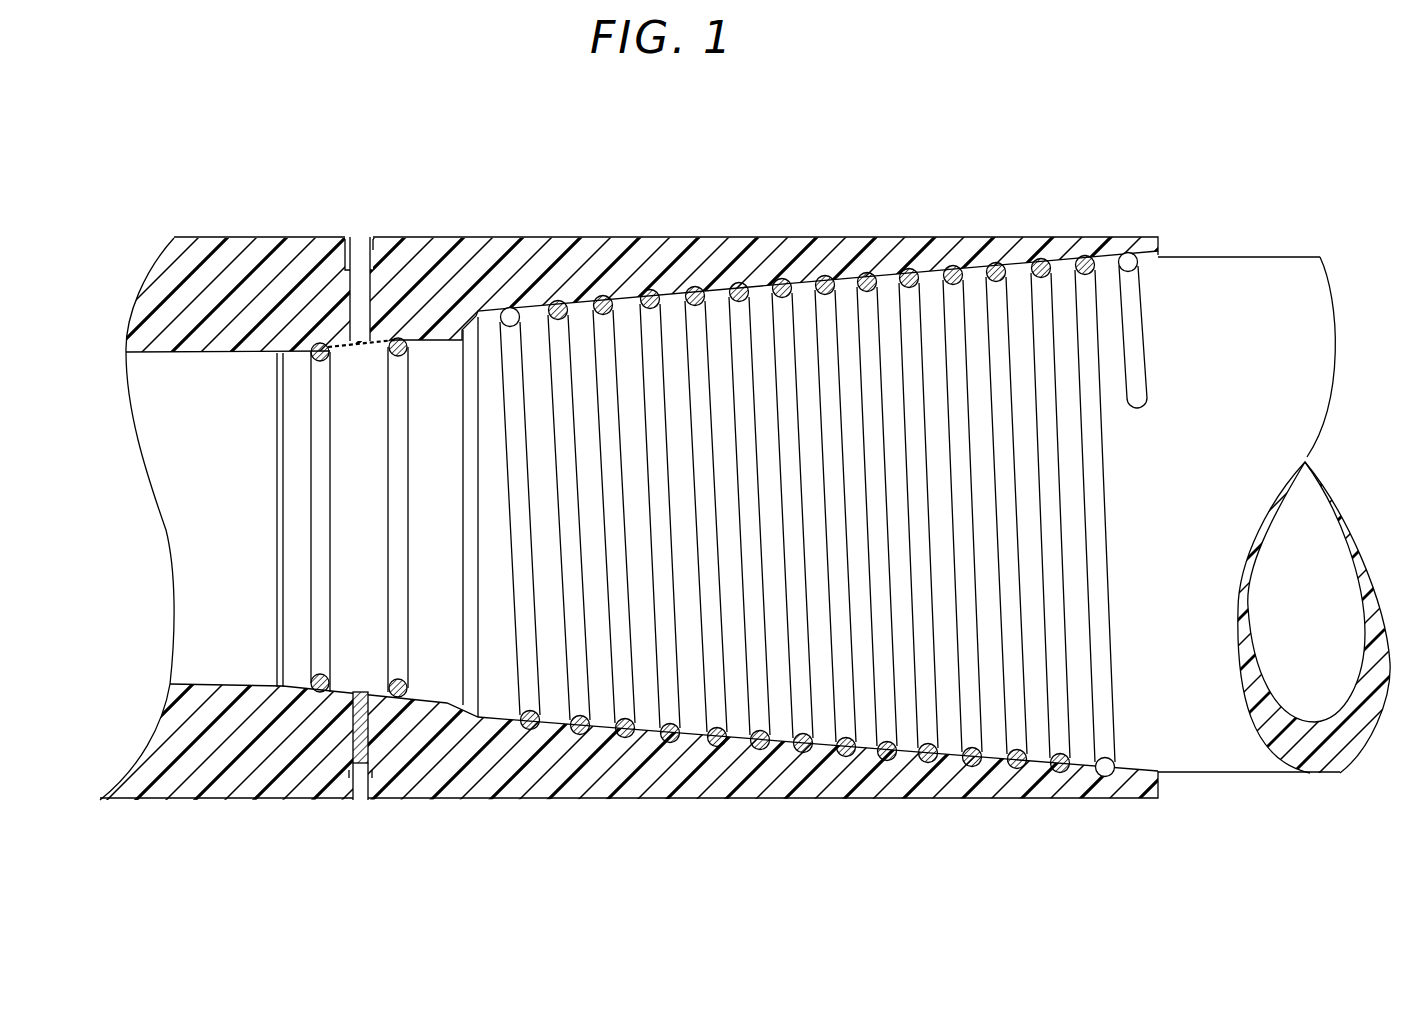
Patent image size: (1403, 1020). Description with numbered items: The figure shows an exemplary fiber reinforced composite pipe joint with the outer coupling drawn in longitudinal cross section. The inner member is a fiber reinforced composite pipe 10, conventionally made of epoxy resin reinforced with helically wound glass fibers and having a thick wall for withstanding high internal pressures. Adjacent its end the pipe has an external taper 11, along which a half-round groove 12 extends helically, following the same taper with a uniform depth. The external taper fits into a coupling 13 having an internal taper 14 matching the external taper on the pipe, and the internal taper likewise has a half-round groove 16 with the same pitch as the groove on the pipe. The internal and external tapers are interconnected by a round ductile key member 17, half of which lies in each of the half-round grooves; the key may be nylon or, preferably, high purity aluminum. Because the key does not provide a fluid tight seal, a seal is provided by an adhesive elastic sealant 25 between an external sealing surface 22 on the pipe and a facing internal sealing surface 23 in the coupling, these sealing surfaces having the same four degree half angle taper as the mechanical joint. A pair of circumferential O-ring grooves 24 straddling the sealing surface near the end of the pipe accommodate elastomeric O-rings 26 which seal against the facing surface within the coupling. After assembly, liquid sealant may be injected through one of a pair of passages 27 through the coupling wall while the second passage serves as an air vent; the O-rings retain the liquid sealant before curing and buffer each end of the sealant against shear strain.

The fiber reinforced composite pipe 10 is at (1246, 259).
The external taper 11 is at (823, 532).
The half-round groove 12 is at (1088, 335).
The coupling 13 is at (487, 797).
The internal taper 14 is at (1001, 752).
The half-round groove 16 is at (882, 758).
The round ductile key member 17 is at (622, 738).
The external sealing surface 22 is at (383, 340).
The internal sealing surface 23 is at (358, 697).
The circumferential O-ring grooves 24 is at (318, 482).
The adhesive elastic sealant 25 is at (347, 748).
The elastomeric O-rings 26 is at (323, 345).
The passages 27 is at (357, 248).